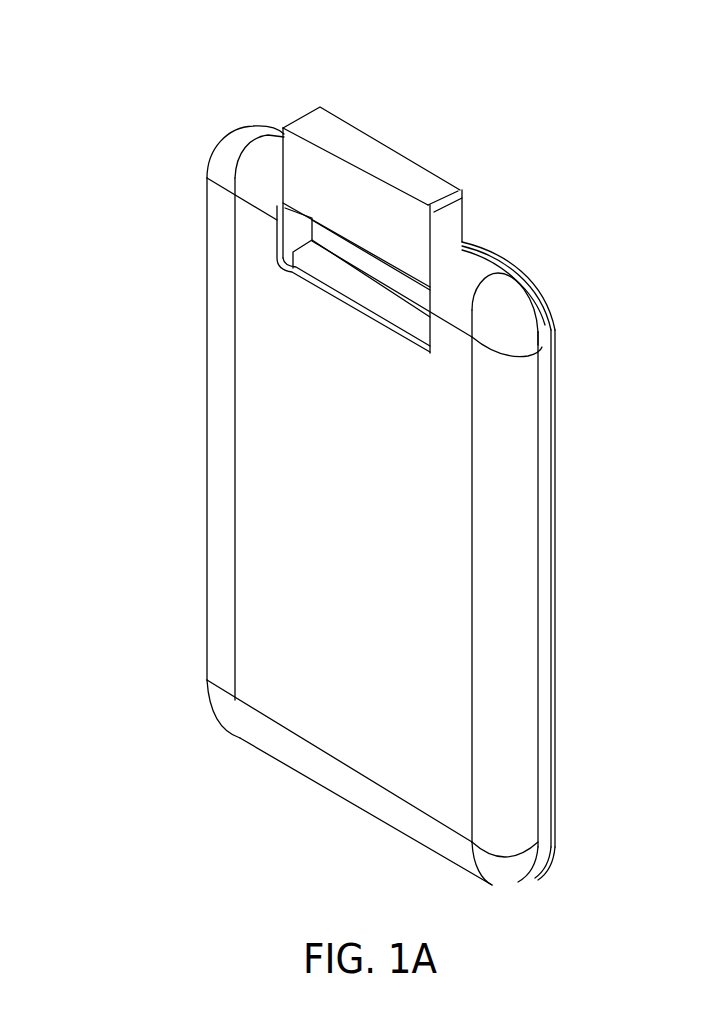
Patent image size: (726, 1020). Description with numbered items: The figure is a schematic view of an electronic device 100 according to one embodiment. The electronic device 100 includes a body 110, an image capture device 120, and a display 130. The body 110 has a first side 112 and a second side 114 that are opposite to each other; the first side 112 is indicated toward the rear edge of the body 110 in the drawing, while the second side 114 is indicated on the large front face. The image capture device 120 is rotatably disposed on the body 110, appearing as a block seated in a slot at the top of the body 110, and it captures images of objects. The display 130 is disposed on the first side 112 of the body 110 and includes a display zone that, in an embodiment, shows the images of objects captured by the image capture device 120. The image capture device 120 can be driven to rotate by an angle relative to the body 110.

The electronic device 100 is at (121, 81).
The body 110 is at (225, 373).
The first side 112 is at (553, 297).
The second side 114 is at (340, 420).
The image capture device 120 is at (398, 150).
The display 130 is at (557, 420).